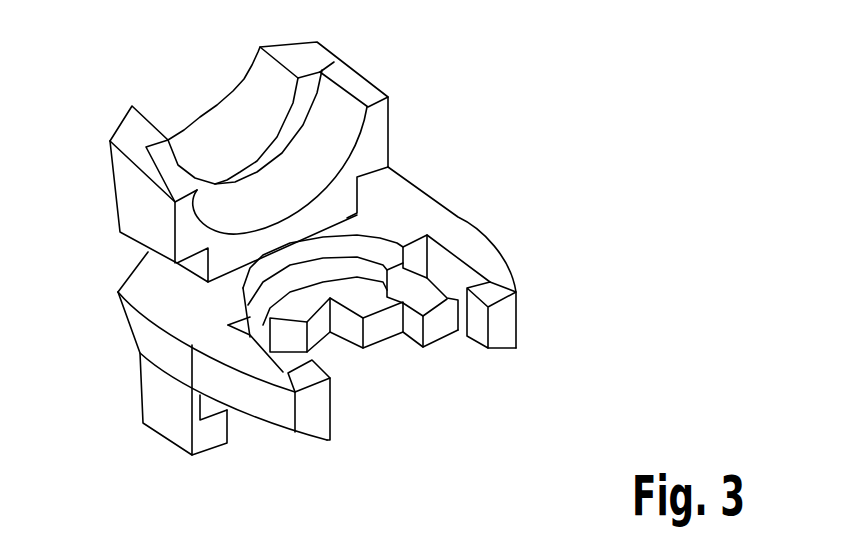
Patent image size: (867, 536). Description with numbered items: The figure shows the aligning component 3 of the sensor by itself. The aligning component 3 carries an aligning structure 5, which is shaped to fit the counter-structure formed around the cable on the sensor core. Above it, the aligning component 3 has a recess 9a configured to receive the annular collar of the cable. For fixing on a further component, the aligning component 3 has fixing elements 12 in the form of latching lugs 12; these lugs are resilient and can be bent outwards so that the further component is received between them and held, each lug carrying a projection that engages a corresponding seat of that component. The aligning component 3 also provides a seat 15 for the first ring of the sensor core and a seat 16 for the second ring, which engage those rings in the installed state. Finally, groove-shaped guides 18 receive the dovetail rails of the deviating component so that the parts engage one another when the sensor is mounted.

The aligning component 3 is at (455, 92).
The aligning structure 5 is at (365, 349).
The recess 9a is at (225, 137).
The fixing elements 12 is at (503, 318).
The seat for the first ring 15 is at (428, 312).
The seat for the second ring 16 is at (400, 243).
The guides 18 is at (197, 266).